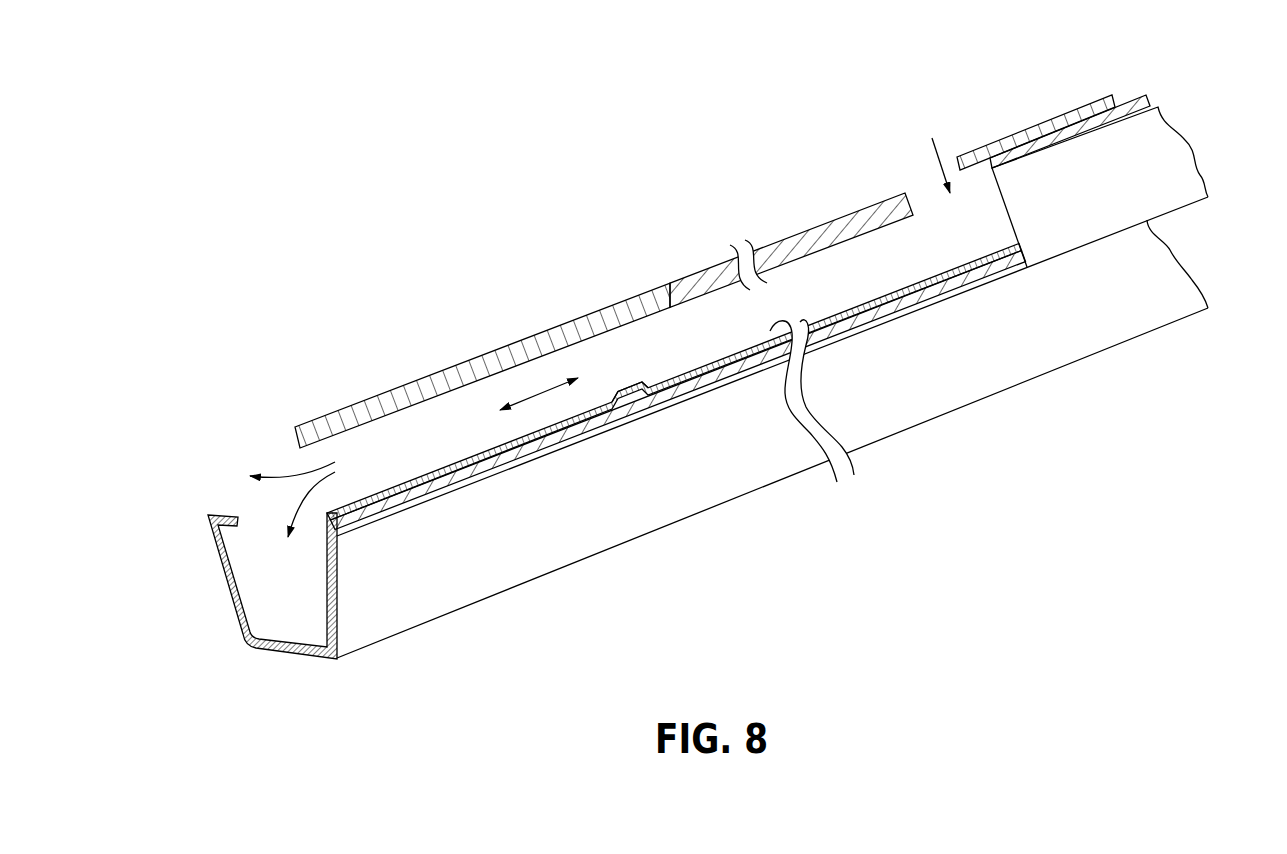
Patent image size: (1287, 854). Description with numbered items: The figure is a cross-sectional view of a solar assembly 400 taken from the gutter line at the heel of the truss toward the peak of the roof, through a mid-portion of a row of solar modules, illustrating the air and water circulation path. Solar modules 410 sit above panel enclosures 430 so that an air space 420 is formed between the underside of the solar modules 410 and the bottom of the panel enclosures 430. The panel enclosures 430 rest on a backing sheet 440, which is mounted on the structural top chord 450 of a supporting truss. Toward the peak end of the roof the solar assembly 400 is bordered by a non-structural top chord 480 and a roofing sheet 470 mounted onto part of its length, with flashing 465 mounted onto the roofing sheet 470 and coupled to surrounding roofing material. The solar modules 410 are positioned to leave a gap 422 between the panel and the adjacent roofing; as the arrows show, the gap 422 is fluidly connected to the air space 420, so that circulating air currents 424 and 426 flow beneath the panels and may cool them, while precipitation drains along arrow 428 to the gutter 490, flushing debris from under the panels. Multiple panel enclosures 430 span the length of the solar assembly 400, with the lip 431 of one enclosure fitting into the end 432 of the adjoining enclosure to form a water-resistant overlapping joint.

The solar assembly 400 is at (405, 235).
The solar modules 410 is at (404, 392).
The air space 420 is at (873, 265).
The gap 422 is at (937, 140).
The circulating air current 424 is at (538, 392).
The circulating air current 426 is at (275, 476).
The precipitation drainage arrow 428 is at (277, 512).
The panel enclosures 430 is at (440, 478).
The lip 431 is at (621, 395).
The end 432 is at (626, 403).
The backing sheet 440 is at (522, 455).
The structural top chord 450 is at (1000, 372).
The flashing 465 is at (1067, 122).
The roofing sheet 470 is at (1137, 102).
The non-structural top chord 480 is at (1155, 197).
The gutter 490 is at (258, 645).